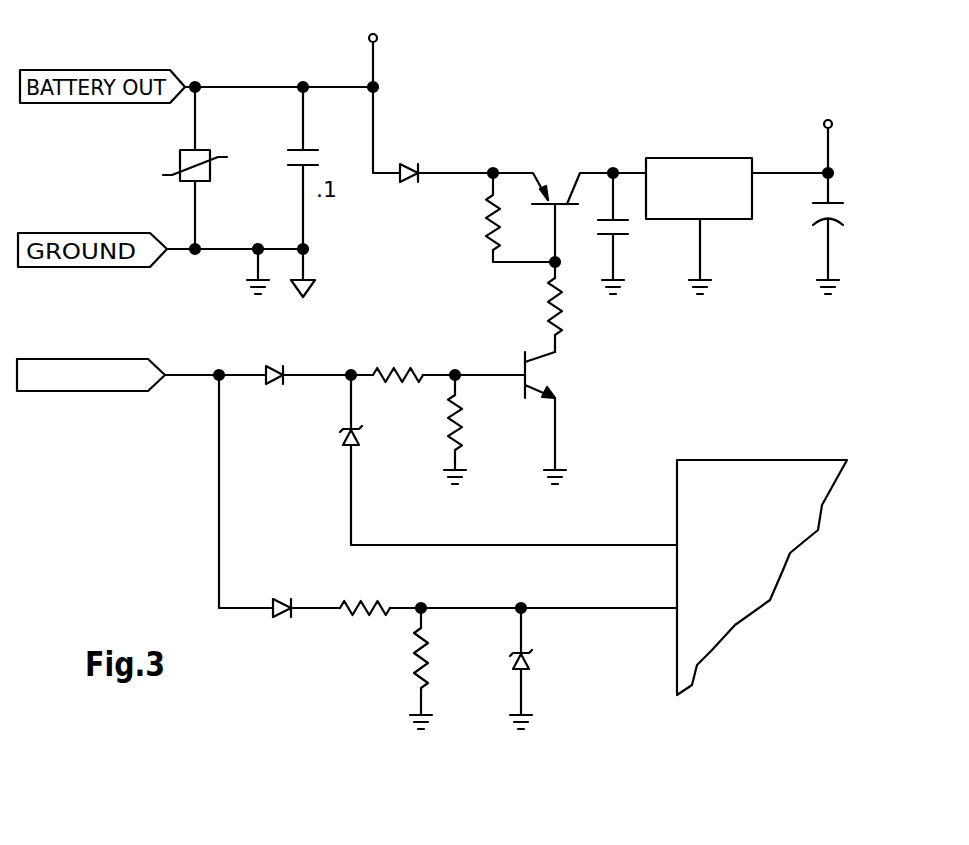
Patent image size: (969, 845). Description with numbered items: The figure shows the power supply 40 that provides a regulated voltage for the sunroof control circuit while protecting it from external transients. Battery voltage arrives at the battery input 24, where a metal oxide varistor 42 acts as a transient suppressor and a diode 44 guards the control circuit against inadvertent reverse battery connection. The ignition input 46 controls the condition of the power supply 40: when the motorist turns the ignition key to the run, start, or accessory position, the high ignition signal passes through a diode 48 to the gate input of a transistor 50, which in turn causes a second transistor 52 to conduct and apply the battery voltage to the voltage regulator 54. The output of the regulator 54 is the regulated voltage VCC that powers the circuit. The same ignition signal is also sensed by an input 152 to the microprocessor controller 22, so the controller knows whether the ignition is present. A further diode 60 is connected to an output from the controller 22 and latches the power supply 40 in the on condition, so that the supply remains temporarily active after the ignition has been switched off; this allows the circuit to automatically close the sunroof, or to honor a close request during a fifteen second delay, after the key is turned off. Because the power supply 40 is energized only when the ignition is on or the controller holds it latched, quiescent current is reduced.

The microprocessor controller 22 is at (700, 460).
The battery input 24 is at (378, 62).
The power supply 40 is at (613, 112).
The metal oxide varistor 42 is at (215, 152).
The diode 44 is at (418, 170).
The ignition input 46 is at (127, 393).
The diode 48 is at (284, 374).
The transistor 50 is at (527, 393).
The second transistor 52 is at (570, 194).
The voltage regulator 54 is at (698, 180).
The diode 60 is at (348, 442).
The controller input 152 is at (640, 612).